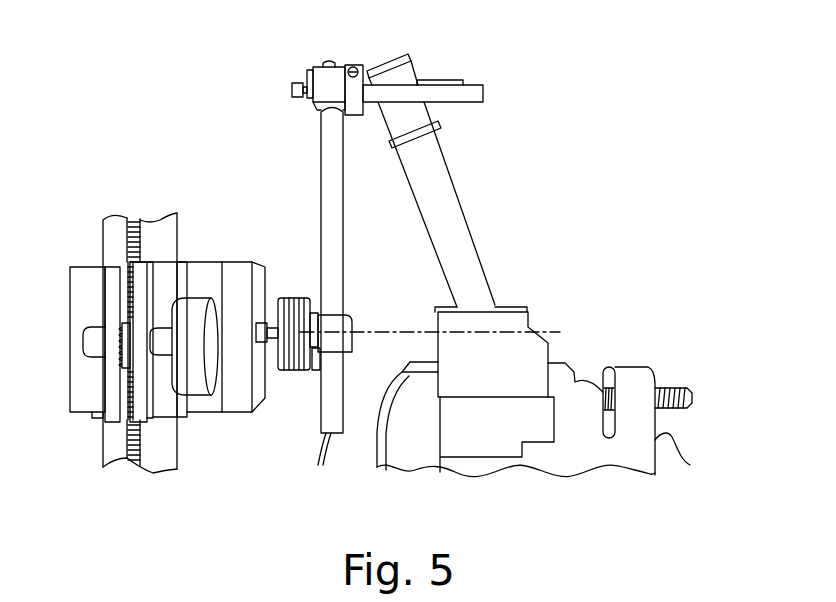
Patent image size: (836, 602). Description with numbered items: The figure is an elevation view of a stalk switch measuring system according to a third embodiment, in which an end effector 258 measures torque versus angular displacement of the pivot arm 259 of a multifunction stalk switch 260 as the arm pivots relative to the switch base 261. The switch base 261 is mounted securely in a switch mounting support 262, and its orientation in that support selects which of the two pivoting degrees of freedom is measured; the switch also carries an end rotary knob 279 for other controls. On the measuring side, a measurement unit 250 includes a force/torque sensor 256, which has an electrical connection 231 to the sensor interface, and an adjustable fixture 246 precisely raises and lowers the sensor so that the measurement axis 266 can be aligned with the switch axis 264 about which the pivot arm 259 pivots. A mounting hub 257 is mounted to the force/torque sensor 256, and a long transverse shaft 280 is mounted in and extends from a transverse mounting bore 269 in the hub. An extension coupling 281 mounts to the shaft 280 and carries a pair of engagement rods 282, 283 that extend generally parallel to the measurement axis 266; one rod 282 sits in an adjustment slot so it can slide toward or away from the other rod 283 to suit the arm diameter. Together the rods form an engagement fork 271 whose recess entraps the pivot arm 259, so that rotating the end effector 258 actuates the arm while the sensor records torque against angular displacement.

The electrical connection 231 is at (327, 453).
The adjustable fixture 246 is at (100, 243).
The measurement unit 250 is at (198, 212).
The force/torque sensor 256 is at (295, 372).
The mounting hub 257 is at (358, 313).
The end effector 258 is at (188, 92).
The pivot arm 259 is at (463, 220).
The multifunction stalk switch 260 is at (530, 323).
The switch base 261 is at (480, 457).
The switch mounting support 262 is at (690, 465).
The switch axis 264 is at (552, 337).
The measurement axis 266 is at (358, 333).
The transverse mounting bore 269 is at (330, 371).
The engagement fork 271 is at (428, 55).
The end rotary knob 279 is at (438, 120).
The long transverse shaft 280 is at (320, 208).
The extension coupling 281 is at (320, 65).
The engagement rod 282 is at (483, 93).
The engagement rod 283 is at (452, 80).